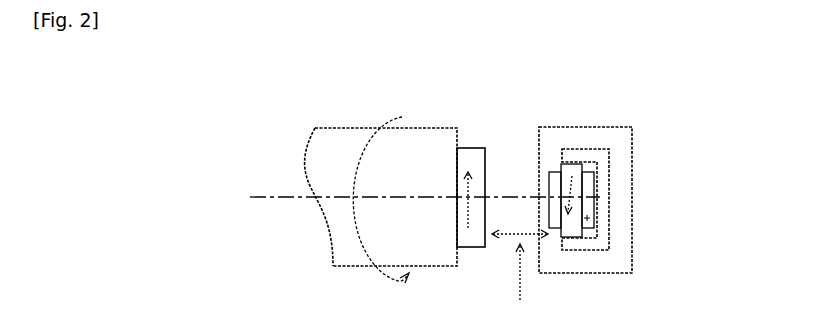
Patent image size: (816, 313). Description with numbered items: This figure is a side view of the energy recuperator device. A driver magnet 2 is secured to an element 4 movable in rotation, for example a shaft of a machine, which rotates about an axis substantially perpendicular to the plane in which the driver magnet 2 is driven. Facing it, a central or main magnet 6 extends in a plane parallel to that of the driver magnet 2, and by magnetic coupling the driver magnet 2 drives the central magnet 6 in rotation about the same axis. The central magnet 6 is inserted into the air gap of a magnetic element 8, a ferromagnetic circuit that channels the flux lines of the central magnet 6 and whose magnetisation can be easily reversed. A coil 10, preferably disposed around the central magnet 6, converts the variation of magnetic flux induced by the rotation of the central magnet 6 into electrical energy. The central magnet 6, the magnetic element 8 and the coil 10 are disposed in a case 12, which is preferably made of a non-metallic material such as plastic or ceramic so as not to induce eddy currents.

The driver magnet 2 is at (465, 156).
The element movable in rotation 4 is at (333, 143).
The central magnet 6 is at (583, 221).
The magnetic element 8 is at (600, 156).
The coil 10 is at (598, 203).
The case 12 is at (622, 247).